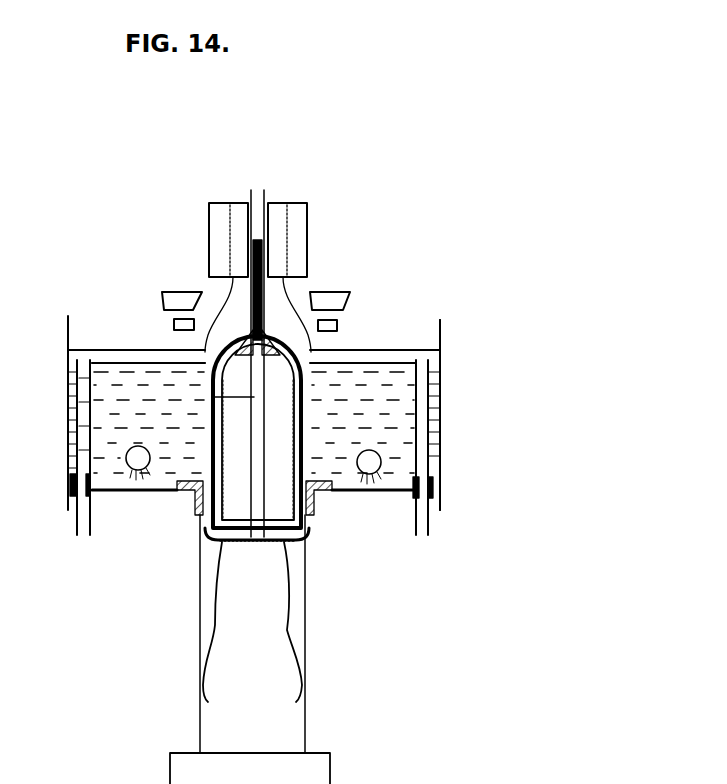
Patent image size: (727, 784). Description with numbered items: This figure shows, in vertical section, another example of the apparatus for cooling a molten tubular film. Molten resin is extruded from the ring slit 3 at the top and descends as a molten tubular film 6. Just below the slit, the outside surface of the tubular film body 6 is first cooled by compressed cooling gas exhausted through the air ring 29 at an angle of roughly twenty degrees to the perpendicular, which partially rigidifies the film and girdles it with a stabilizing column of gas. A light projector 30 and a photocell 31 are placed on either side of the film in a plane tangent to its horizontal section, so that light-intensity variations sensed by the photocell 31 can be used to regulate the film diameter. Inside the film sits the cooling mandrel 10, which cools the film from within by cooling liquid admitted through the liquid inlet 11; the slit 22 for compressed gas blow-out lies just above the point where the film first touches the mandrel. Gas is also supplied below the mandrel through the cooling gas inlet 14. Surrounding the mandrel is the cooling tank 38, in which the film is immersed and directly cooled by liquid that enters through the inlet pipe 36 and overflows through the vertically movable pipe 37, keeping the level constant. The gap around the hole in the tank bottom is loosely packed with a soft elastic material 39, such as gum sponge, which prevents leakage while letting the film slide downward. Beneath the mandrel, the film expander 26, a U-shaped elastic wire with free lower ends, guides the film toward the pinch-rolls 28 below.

The ring slit 3 is at (290, 214).
The molten tubular film 6 is at (298, 287).
The cooling mandrel 10 is at (312, 358).
The liquid inlet 11 is at (254, 396).
The cooling gas inlet 14 is at (258, 478).
The slit for compressed gas blow-out 22 is at (305, 352).
The film expander 26 is at (300, 645).
The pinch-rolls 28 is at (312, 770).
The air ring 29 is at (172, 297).
The light projector 30 is at (174, 325).
The photocell 31 is at (337, 326).
The inlet pipe 36 is at (136, 472).
The vertically movable pipe 37 is at (75, 508).
The cooling tank 38 is at (430, 440).
The soft elastic material 39 is at (197, 502).